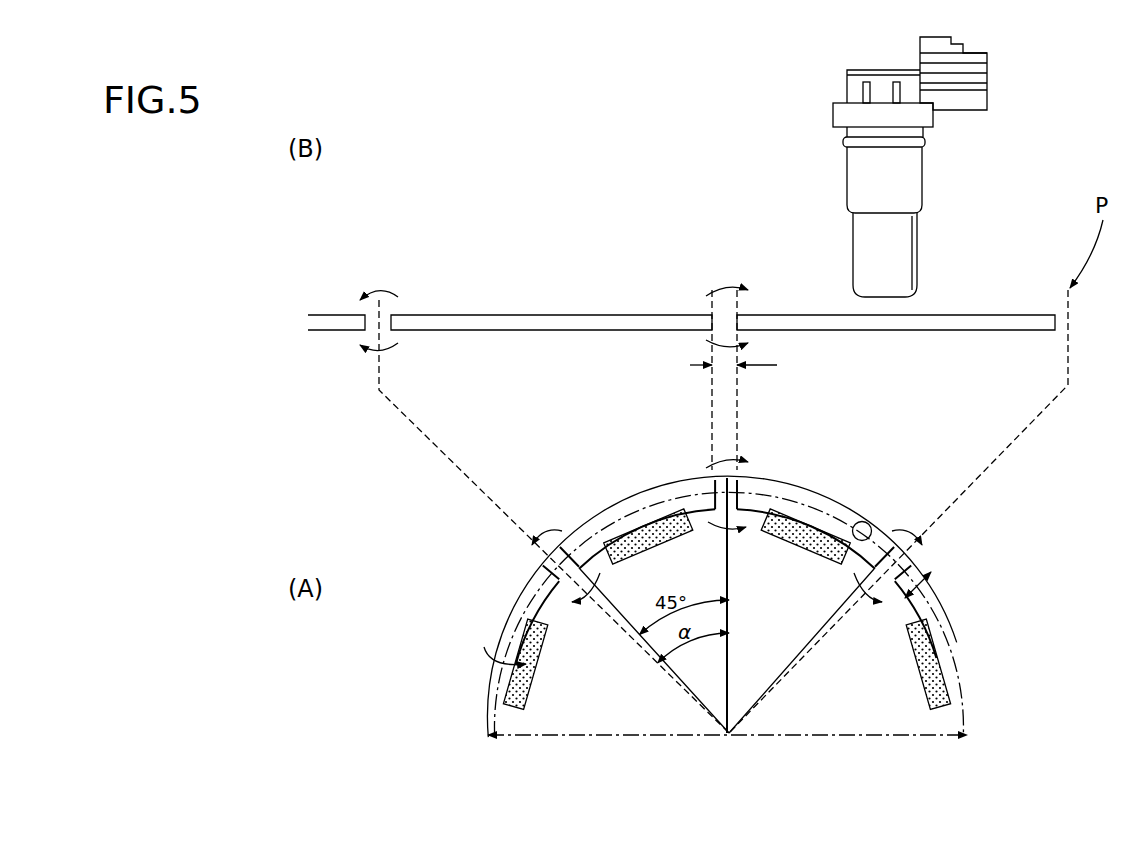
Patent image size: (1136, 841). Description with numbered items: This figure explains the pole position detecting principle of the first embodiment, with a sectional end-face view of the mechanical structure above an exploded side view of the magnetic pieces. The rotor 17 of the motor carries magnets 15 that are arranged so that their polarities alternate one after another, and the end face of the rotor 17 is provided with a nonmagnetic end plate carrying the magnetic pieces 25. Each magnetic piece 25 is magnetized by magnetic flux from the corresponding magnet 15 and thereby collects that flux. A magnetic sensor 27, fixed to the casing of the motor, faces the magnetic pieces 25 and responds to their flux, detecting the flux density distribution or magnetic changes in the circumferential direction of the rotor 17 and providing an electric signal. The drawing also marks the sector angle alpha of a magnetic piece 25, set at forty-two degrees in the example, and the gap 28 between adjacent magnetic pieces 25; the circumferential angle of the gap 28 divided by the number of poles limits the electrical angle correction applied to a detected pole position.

The magnets 15 is at (958, 644).
The rotor 17 is at (866, 708).
The magnetic pieces 25 is at (493, 320).
The magnetic sensor 27 is at (987, 97).
The gap 28 is at (737, 367).